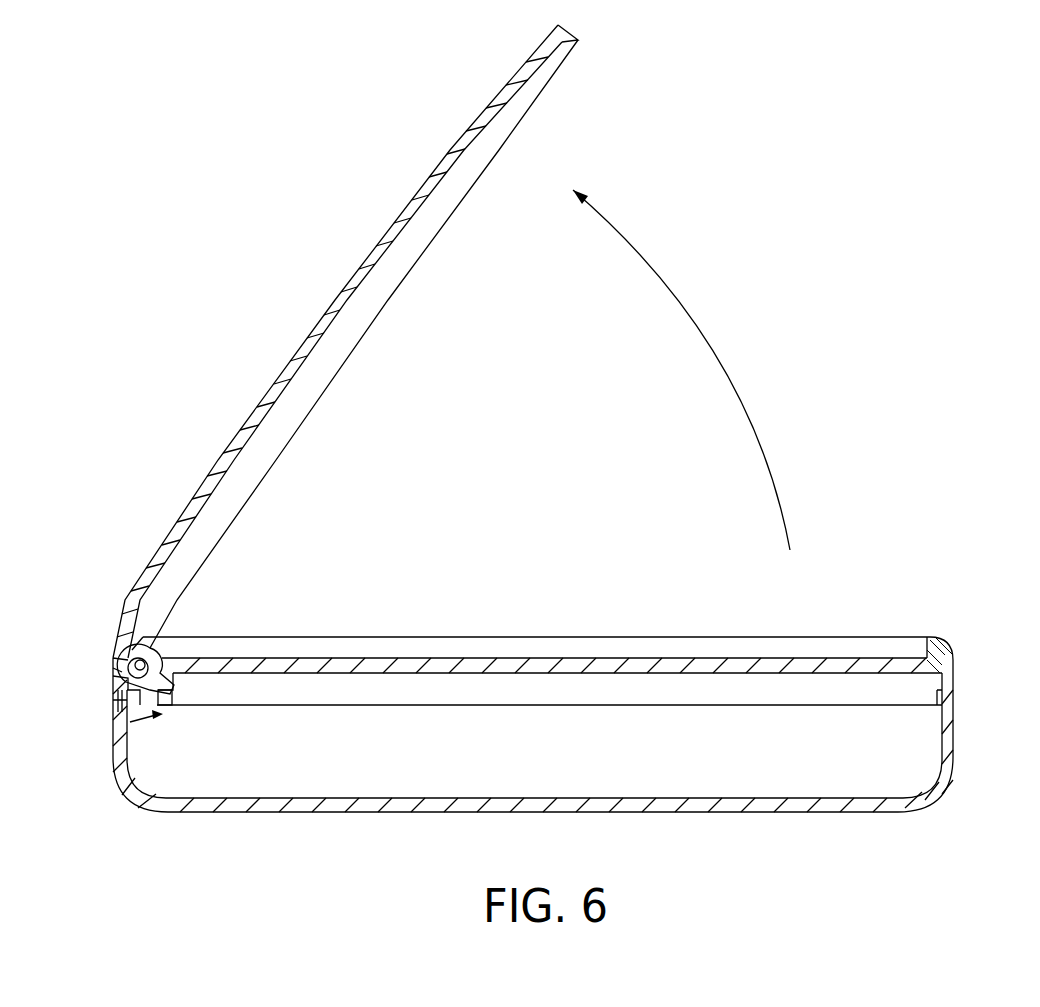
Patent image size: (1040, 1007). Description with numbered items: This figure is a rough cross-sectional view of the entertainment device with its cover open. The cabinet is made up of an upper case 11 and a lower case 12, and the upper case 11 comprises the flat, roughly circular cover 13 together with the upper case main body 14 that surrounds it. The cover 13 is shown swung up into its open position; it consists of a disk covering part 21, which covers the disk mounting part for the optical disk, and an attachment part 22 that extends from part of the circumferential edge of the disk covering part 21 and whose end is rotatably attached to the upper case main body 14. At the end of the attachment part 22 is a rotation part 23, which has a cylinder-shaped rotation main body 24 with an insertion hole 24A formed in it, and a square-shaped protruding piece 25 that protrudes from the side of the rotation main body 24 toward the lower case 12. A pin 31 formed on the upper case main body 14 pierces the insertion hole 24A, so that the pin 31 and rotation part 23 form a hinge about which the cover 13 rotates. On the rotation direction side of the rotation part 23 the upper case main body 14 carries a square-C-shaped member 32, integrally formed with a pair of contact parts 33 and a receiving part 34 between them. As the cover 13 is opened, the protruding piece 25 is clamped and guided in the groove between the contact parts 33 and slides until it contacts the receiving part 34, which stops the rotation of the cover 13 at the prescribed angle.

The upper case 11 is at (956, 632).
The lower case 12 is at (945, 742).
The cover 13 is at (372, 252).
The upper case main body 14 is at (885, 658).
The disk covering part 21 is at (284, 371).
The attachment part 22 is at (118, 622).
The rotation part 23 is at (118, 676).
The rotation main body 24 is at (118, 706).
The insertion hole 24A is at (113, 668).
The protruding piece 25 is at (127, 698).
The pin 31 is at (143, 640).
The square-"C"-shaped member 32 is at (167, 708).
The contact parts 33 is at (190, 692).
The receiving part 34 is at (178, 678).